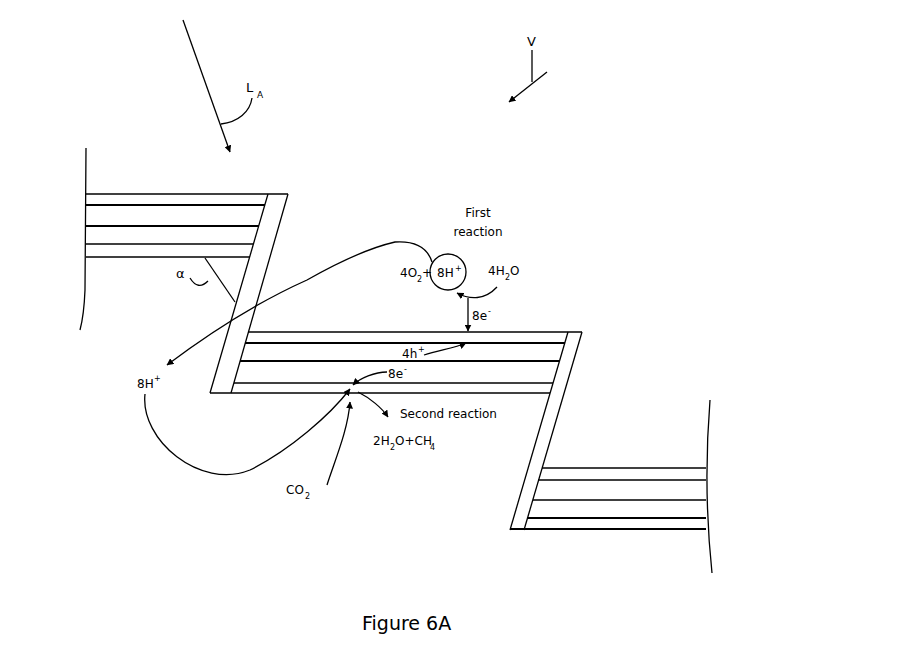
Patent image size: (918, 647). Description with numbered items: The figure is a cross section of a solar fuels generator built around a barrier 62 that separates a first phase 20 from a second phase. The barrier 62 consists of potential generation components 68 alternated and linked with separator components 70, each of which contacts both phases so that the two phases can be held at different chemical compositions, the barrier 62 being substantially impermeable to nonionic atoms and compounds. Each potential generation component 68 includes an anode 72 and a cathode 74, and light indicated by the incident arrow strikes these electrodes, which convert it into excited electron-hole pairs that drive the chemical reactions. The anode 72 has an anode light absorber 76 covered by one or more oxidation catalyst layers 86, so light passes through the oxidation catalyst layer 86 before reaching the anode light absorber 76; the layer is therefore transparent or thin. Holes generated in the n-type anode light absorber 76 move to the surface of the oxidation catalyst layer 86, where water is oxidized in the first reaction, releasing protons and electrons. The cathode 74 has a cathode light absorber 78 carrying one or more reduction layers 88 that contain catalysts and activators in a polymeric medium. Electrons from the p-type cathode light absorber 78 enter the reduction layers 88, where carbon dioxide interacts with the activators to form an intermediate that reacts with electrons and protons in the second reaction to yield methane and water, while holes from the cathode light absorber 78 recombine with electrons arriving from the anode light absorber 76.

The first phase 20 is at (627, 185).
The barrier 62 is at (70, 222).
The potential generation component 68 is at (133, 177).
The separator component 70 is at (232, 310).
The anode 72 is at (272, 219).
The cathode 74 is at (272, 235).
The anode light absorber 76 is at (135, 218).
The cathode light absorber 78 is at (98, 237).
The oxidation catalyst layer 86 is at (181, 205).
The reduction layer 88 is at (109, 247).